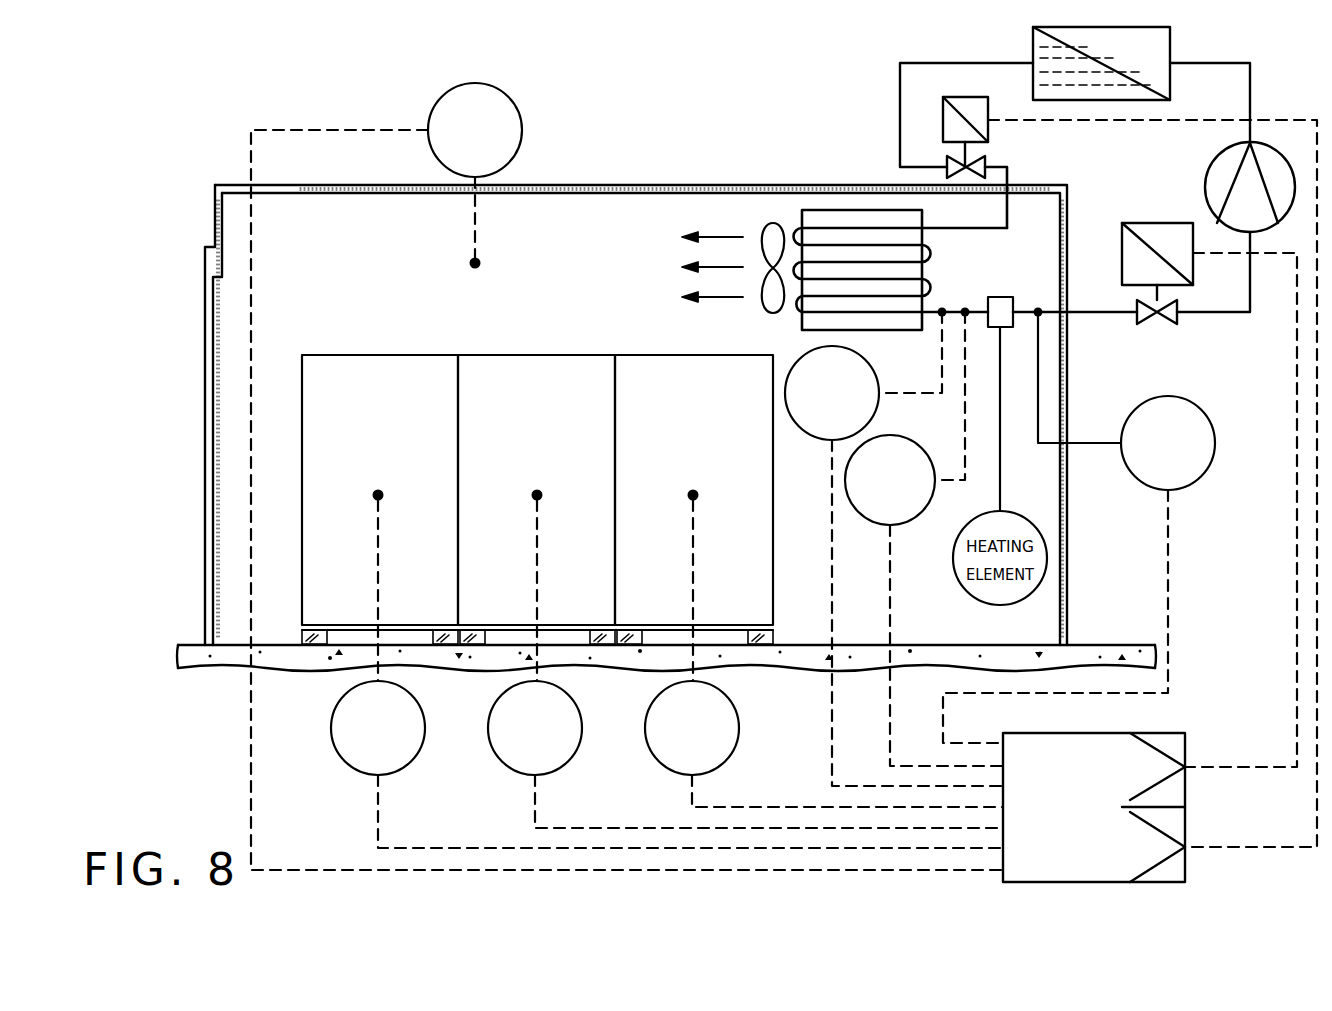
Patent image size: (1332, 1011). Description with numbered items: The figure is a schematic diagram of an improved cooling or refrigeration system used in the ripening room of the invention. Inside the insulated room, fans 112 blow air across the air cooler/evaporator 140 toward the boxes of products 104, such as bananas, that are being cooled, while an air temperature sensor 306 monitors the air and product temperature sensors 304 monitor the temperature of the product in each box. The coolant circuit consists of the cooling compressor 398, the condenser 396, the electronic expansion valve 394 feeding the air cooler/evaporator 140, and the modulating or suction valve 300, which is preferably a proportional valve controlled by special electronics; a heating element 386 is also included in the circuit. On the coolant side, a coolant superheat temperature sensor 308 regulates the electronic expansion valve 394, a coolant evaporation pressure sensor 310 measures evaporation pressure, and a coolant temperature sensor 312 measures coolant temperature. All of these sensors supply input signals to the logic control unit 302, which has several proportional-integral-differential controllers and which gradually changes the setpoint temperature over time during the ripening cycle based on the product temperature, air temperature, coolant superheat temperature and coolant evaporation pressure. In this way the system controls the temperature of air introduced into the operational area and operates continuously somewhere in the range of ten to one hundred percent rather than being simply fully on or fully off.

The boxes of products 104 is at (412, 410).
The fans 112 is at (775, 232).
The air cooler/evaporator 140 is at (840, 233).
The modulating valve 300 is at (1165, 323).
The logic control unit 302 is at (1058, 748).
The product temperature sensors 304 is at (515, 760).
The air temperature sensor 306 is at (502, 92).
The coolant superheat temperature sensor 308 is at (860, 365).
The coolant evaporation pressure sensor 310 is at (893, 445).
The coolant temperature sensor 312 is at (1203, 412).
The heating element 386 is at (1000, 297).
The electronic expansion valve 394 is at (978, 162).
The condenser 396 is at (1108, 100).
The cooling compressor 398 is at (1242, 190).